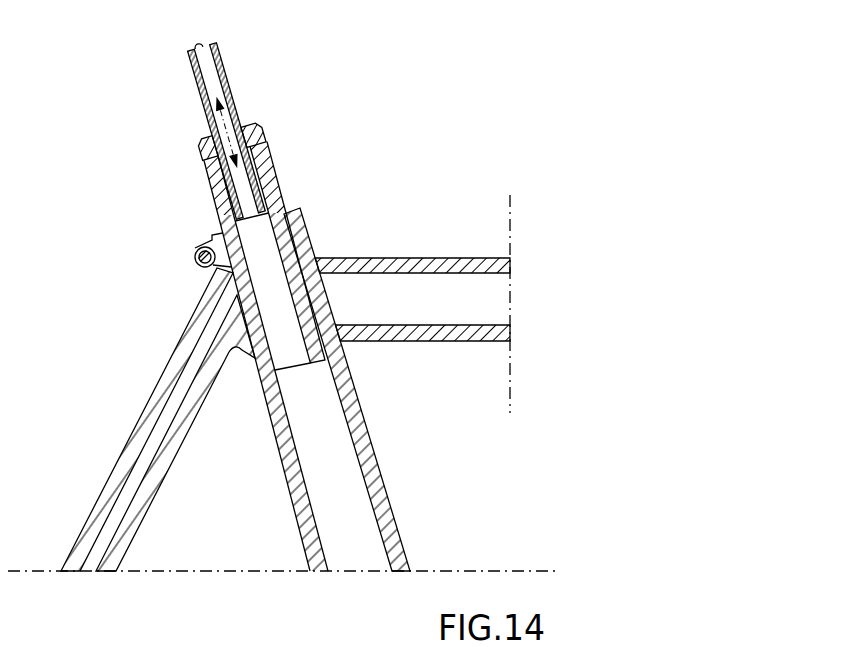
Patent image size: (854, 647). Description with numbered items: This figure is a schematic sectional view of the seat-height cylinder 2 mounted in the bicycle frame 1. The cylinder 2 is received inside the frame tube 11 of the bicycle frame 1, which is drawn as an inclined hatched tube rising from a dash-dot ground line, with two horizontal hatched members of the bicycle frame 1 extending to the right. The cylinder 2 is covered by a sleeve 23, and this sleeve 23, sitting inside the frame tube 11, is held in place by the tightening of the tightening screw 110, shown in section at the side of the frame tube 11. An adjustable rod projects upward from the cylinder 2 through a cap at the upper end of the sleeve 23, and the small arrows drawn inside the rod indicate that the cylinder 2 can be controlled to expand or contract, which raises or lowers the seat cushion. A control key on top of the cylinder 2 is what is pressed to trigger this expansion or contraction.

The bicycle frame 1 is at (285, 414).
The frame tube 11 is at (378, 389).
The tightening screw 110 is at (152, 274).
The cylinder 2 is at (326, 319).
The sleeve 23 is at (296, 180).